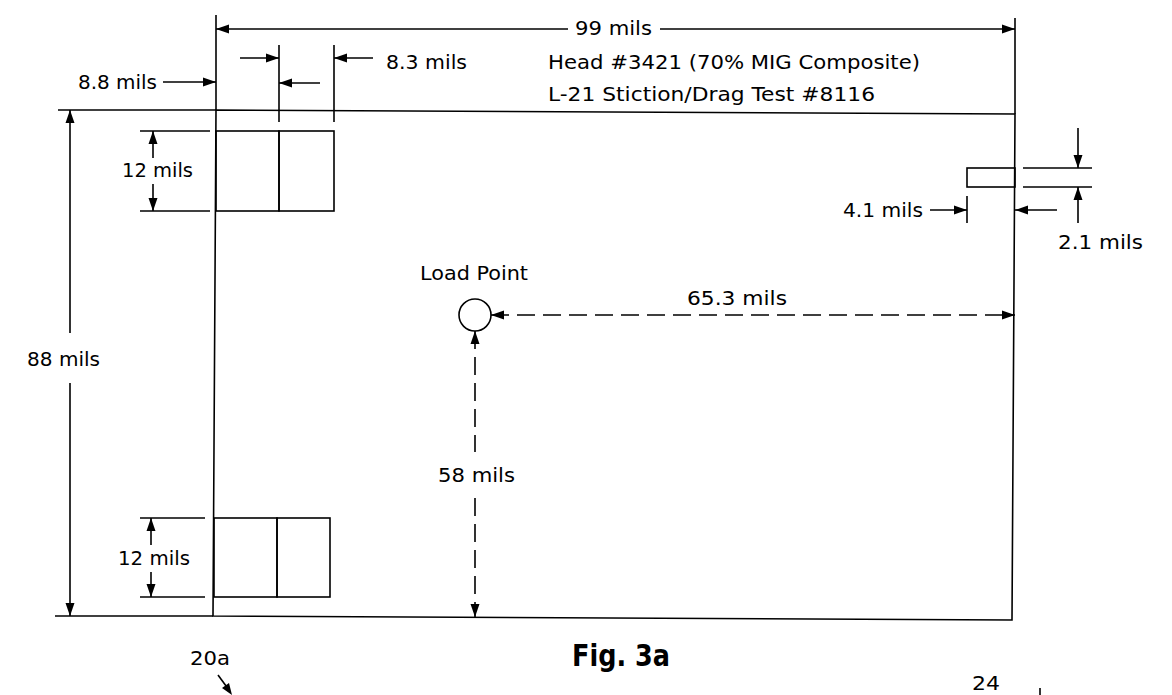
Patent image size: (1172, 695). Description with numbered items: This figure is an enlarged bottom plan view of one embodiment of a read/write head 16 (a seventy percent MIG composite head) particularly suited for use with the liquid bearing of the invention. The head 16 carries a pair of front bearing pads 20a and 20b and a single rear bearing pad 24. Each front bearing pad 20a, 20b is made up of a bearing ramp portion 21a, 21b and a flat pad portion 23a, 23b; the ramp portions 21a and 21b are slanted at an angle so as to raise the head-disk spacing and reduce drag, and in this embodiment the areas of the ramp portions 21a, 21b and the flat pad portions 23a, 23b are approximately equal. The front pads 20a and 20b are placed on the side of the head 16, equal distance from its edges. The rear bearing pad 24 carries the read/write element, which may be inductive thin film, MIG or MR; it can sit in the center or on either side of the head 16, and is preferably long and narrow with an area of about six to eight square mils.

The read/write head 16 is at (1013, 487).
The front bearing pad 20a is at (236, 198).
The front bearing pad 20b is at (233, 525).
The bearing ramp portion 21a is at (247, 171).
The flat pad portion 23a is at (306, 171).
The bearing ramp portion 21b is at (245, 557).
The flat pad portion 23b is at (303, 557).
The rear bearing pad 24 is at (993, 168).